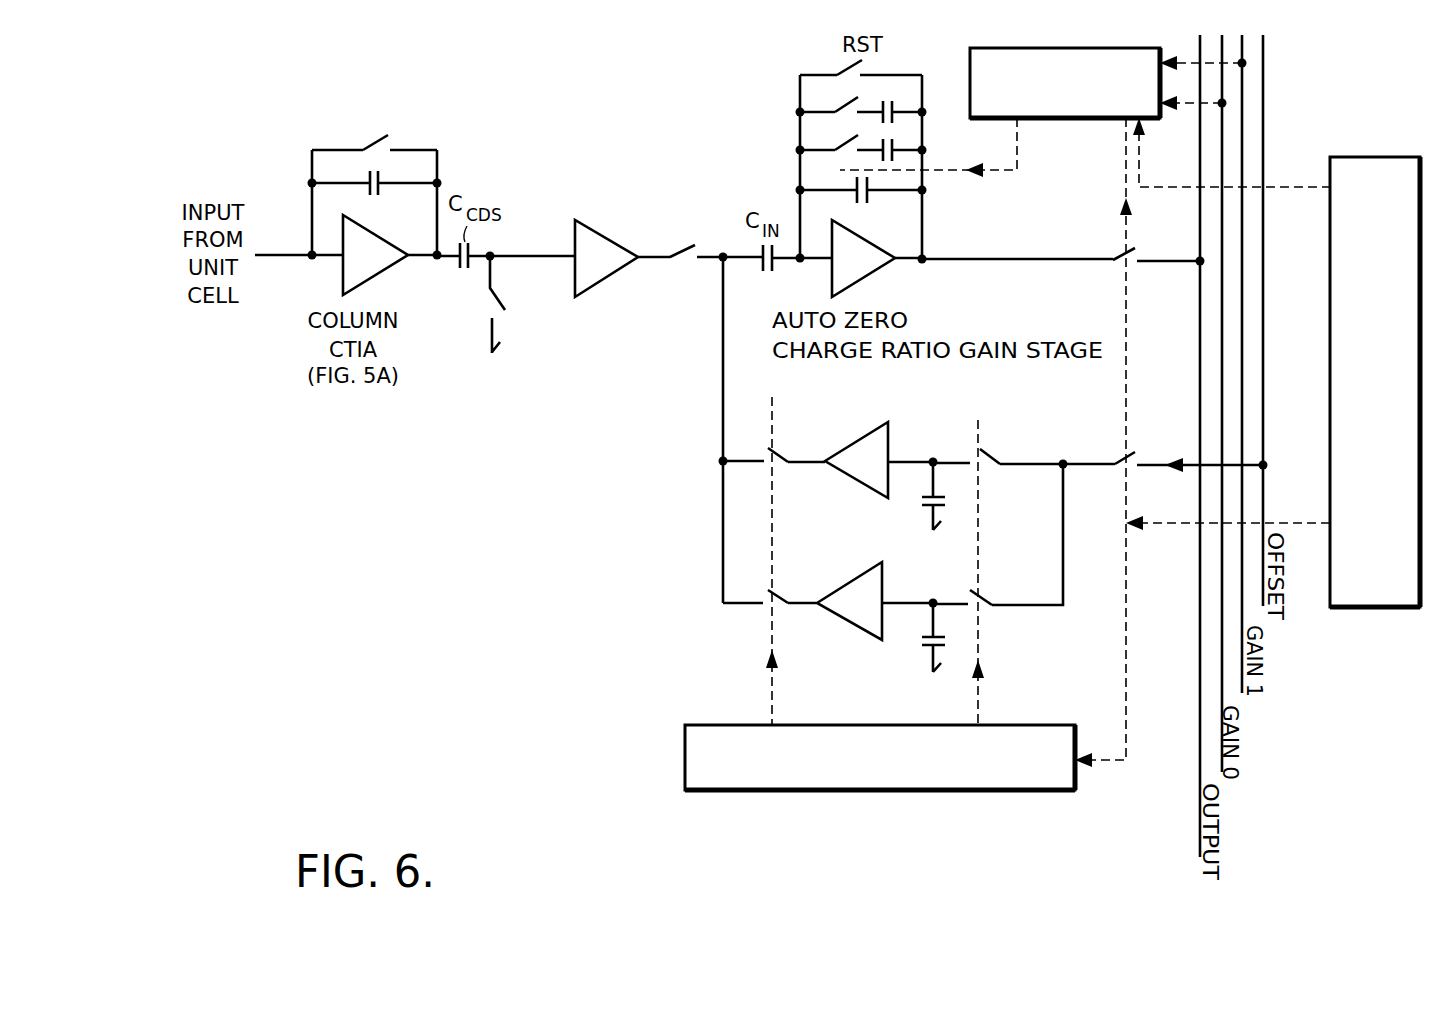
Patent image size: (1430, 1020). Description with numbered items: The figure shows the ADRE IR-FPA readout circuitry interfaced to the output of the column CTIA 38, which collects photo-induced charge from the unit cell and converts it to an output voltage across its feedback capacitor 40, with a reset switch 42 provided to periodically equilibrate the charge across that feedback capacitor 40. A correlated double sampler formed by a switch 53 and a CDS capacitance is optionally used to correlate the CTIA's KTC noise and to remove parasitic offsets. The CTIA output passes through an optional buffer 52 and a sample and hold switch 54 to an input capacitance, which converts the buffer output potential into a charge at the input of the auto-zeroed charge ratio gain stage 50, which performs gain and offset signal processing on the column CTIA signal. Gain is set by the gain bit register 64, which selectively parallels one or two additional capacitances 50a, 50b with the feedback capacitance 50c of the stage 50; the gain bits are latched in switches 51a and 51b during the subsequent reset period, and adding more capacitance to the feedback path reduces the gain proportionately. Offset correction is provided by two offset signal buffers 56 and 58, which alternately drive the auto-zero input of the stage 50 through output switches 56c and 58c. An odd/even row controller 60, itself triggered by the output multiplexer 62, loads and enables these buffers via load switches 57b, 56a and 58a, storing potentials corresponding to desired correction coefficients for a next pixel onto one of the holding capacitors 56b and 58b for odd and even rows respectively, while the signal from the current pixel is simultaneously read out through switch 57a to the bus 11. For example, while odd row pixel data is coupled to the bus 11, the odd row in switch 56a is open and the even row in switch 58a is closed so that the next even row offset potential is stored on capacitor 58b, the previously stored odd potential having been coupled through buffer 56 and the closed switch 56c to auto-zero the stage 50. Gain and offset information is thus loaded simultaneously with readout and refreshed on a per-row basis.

The bus 11 is at (1202, 126).
The column CTIA 38 is at (373, 277).
The feedback capacitor 40 is at (378, 192).
The reset switch 42 is at (368, 145).
The auto-zeroed charge ratio gain stage 50 is at (905, 285).
The additional capacitance 50a is at (899, 137).
The additional capacitance 50b is at (898, 93).
The feedback capacitance 50c is at (868, 200).
The switch 51a is at (847, 140).
The switch 51b is at (847, 101).
The buffer 52 is at (598, 283).
The switch 53 is at (500, 312).
The sample and hold switch 54 is at (678, 260).
The offset signal buffer 56 is at (845, 468).
The odd row in switch 56a is at (988, 453).
The holding capacitor 56b is at (948, 502).
The output switch 56c is at (765, 449).
The switch 57a is at (1137, 251).
The load switch 57b is at (1137, 452).
The offset signal buffer 58 is at (828, 607).
The even row in switch 58a is at (987, 595).
The holding capacitor 58b is at (922, 638).
The output switch 58c is at (765, 590).
The odd/even row controller 60 is at (685, 747).
The output multiplexer 62 is at (1377, 608).
The gain bit register 64 is at (1058, 120).